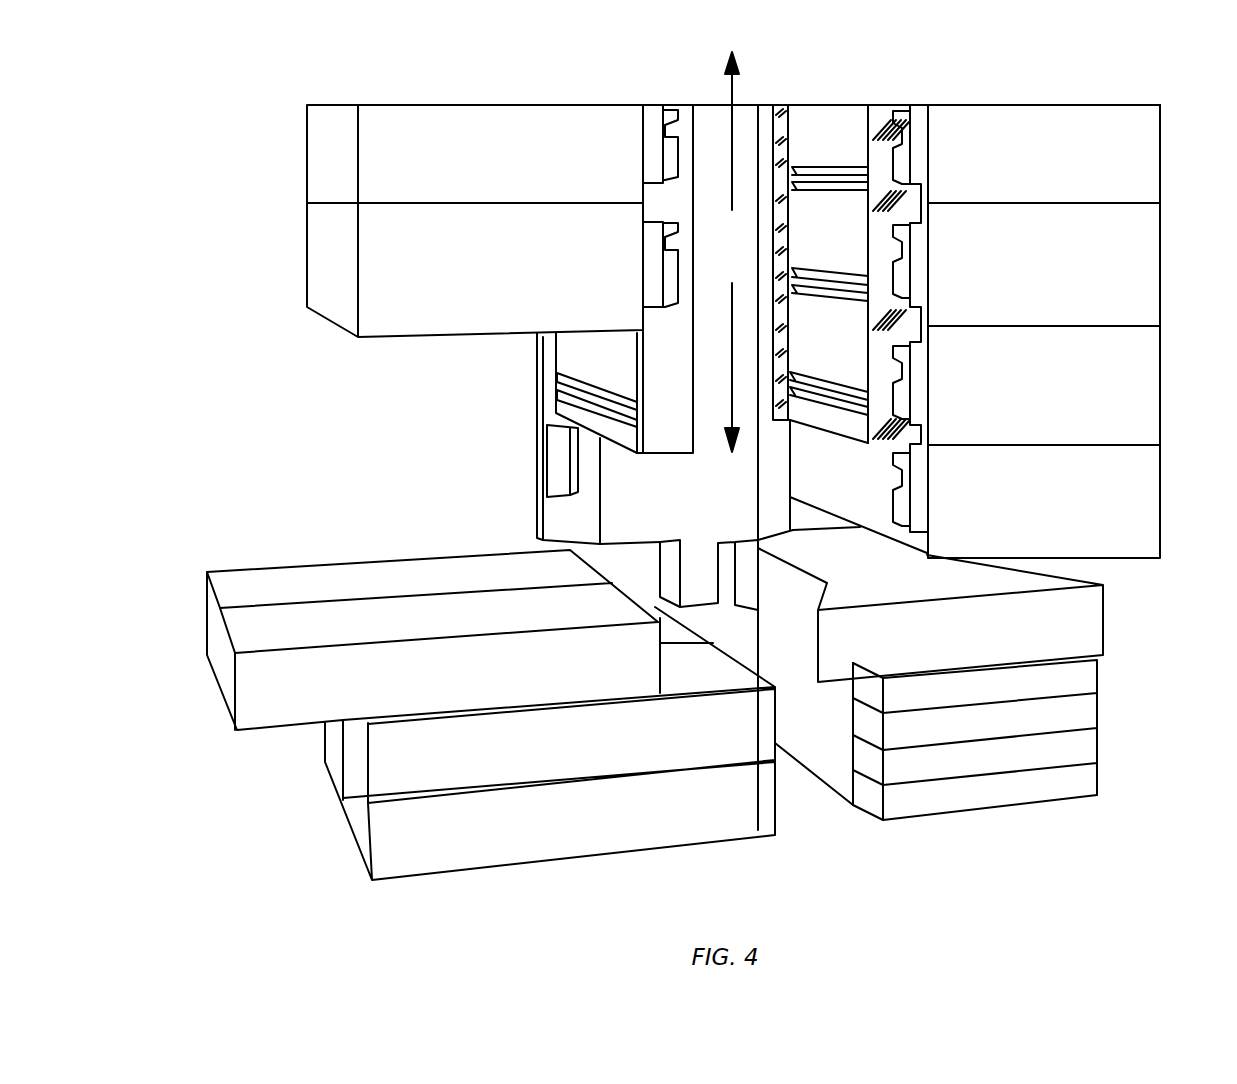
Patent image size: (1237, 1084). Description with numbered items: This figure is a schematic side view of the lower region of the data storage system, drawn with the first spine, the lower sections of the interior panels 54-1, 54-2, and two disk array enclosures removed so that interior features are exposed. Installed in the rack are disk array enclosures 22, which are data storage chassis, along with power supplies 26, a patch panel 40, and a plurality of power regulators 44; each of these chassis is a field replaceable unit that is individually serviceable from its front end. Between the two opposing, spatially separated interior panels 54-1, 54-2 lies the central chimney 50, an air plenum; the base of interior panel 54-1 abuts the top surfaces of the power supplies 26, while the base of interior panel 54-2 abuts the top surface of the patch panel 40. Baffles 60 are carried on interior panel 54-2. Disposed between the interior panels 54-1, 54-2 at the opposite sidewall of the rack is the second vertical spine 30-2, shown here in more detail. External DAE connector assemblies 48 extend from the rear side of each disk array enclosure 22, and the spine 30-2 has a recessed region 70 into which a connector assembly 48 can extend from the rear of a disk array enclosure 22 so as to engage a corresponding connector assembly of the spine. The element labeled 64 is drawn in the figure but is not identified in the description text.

The disk array enclosure 22 is at (497, 172).
The power supply 26 is at (352, 778).
The second vertical spine 30-2 is at (668, 504).
The patch panel 40 is at (1090, 637).
The power regulator 44 is at (1077, 743).
The external DAE connector assembly 48 is at (665, 122).
The central chimney 50 is at (731, 252).
The interior panel 54-1 is at (571, 364).
The interior panel 54-2 is at (804, 144).
The baffle 60 is at (556, 395).
The base 64 is at (799, 737).
The recessed region 70 is at (553, 452).